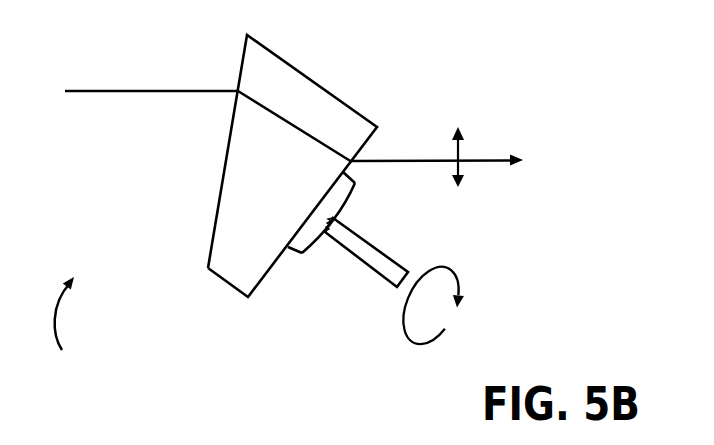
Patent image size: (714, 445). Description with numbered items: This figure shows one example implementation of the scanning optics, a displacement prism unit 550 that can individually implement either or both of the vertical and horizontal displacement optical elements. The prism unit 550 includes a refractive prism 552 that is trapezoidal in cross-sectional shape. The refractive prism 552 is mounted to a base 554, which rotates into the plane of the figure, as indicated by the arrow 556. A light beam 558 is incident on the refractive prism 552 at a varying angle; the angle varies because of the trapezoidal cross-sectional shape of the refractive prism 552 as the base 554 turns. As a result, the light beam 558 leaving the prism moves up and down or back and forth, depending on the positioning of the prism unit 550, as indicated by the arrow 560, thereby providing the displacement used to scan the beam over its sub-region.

The displacement prism unit 550 is at (66, 329).
The refractive prism 552 is at (225, 283).
The base 554 is at (350, 249).
The arrow 556 is at (447, 266).
The light beam 558 is at (118, 90).
The arrow 560 is at (459, 143).